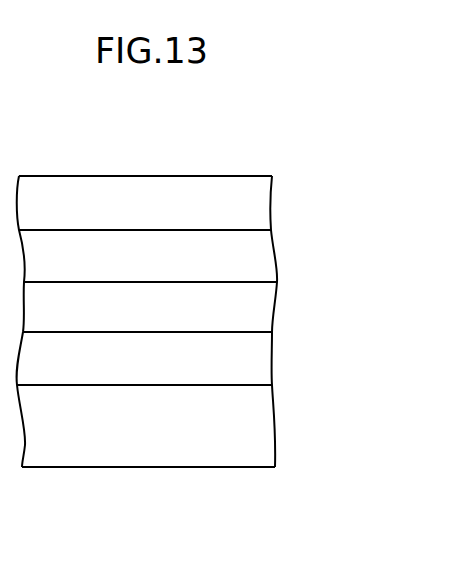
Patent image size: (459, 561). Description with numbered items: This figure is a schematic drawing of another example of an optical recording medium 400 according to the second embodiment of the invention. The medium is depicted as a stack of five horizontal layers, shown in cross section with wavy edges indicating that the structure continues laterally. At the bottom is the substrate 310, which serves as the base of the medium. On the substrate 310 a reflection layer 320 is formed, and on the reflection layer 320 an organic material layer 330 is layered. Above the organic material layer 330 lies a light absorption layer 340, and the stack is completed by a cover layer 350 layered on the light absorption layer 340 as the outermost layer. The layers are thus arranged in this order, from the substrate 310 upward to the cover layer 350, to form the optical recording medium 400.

The optical recording medium 400 is at (226, 148).
The cover layer 350 is at (265, 208).
The light absorption layer 340 is at (265, 261).
The organic material layer 330 is at (265, 313).
The reflection layer 320 is at (265, 365).
The substrate 310 is at (265, 427).